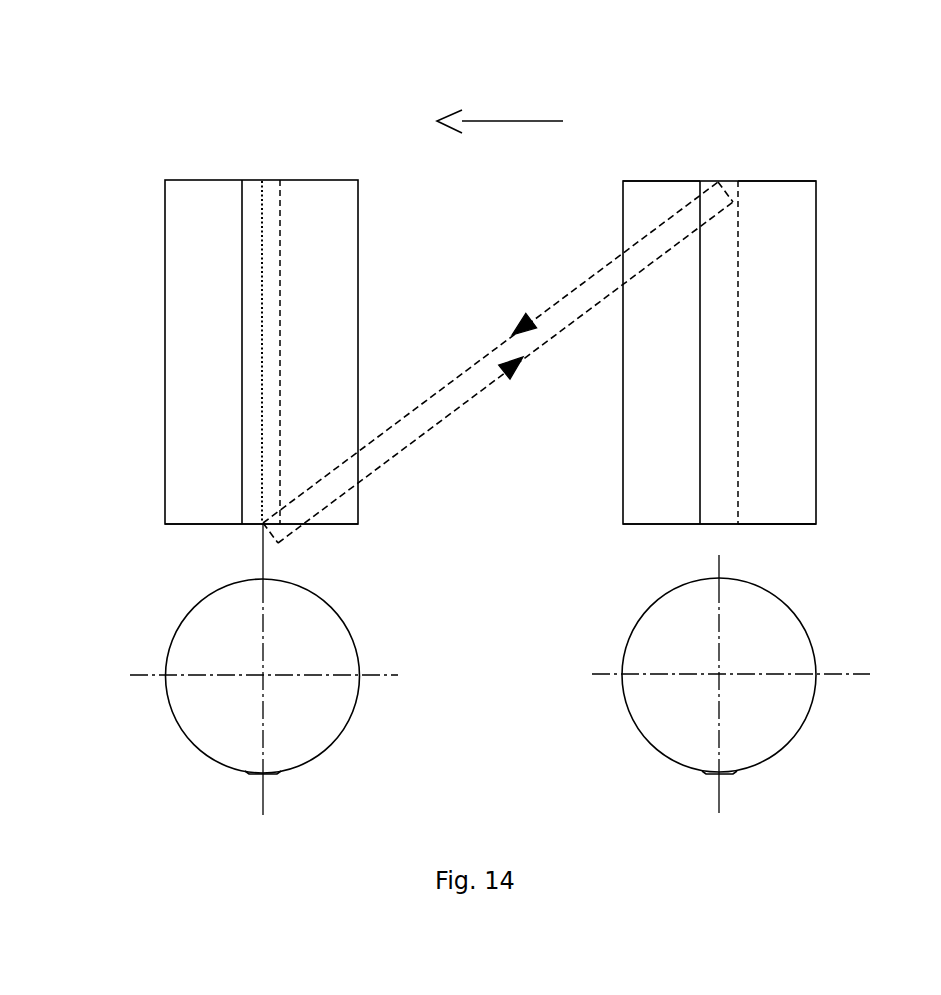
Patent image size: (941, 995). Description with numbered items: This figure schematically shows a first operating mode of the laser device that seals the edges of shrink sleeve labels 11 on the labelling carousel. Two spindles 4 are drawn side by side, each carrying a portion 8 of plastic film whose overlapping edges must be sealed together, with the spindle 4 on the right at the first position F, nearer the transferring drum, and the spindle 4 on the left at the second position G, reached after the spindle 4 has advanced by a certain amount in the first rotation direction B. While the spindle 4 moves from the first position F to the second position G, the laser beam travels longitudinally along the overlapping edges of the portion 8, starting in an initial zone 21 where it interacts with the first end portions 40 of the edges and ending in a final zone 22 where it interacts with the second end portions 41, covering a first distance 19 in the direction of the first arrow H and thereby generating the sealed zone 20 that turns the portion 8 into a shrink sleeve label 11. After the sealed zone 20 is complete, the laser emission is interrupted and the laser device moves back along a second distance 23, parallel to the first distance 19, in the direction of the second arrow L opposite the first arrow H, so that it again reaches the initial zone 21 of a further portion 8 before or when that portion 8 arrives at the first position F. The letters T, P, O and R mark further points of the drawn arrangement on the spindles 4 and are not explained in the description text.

The spindle 4 is at (843, 168).
The portion of plastic film 8 is at (795, 363).
The shrink sleeve label 11 is at (187, 337).
The first distance 19 is at (425, 398).
The sealed zone 20 is at (262, 223).
The initial zone 21 is at (709, 165).
The final zone 22 is at (225, 542).
The second distance 23 is at (395, 453).
The first end portions of the edges 40 is at (750, 161).
The second end portions of the edges 41 is at (691, 534).
The direction T is at (247, 157).
The second position G is at (276, 128).
The first rotation direction B is at (502, 118).
The first arrow H is at (531, 320).
The second arrow L is at (511, 381).
The point P is at (312, 547).
The point O is at (673, 144).
The first position F is at (740, 120).
The point R is at (744, 537).